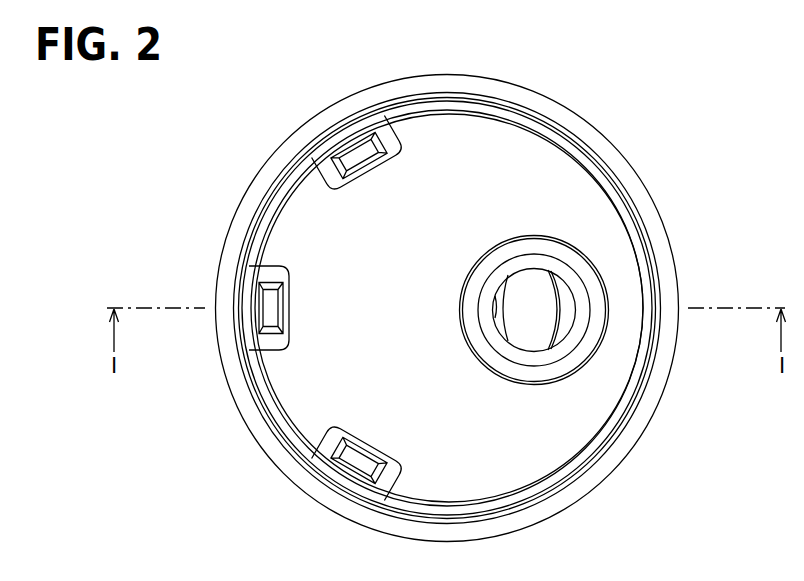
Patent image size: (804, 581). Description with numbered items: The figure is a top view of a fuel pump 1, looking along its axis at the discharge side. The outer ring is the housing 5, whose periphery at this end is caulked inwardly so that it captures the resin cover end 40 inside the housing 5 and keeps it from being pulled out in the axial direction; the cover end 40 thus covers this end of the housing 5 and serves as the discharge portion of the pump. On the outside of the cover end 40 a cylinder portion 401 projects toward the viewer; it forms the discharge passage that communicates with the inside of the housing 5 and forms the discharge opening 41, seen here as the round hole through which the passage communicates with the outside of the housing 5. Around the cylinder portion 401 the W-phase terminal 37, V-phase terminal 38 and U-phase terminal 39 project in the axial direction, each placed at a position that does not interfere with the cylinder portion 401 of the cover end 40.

The fuel pump 1 is at (646, 70).
The housing 5 is at (577, 125).
The cover end 40 is at (573, 173).
The cylinder portion 401 is at (560, 255).
The discharge opening 41 is at (563, 336).
The W-phase terminal 37 is at (350, 470).
The V-phase terminal 38 is at (265, 283).
The U-phase terminal 39 is at (357, 143).